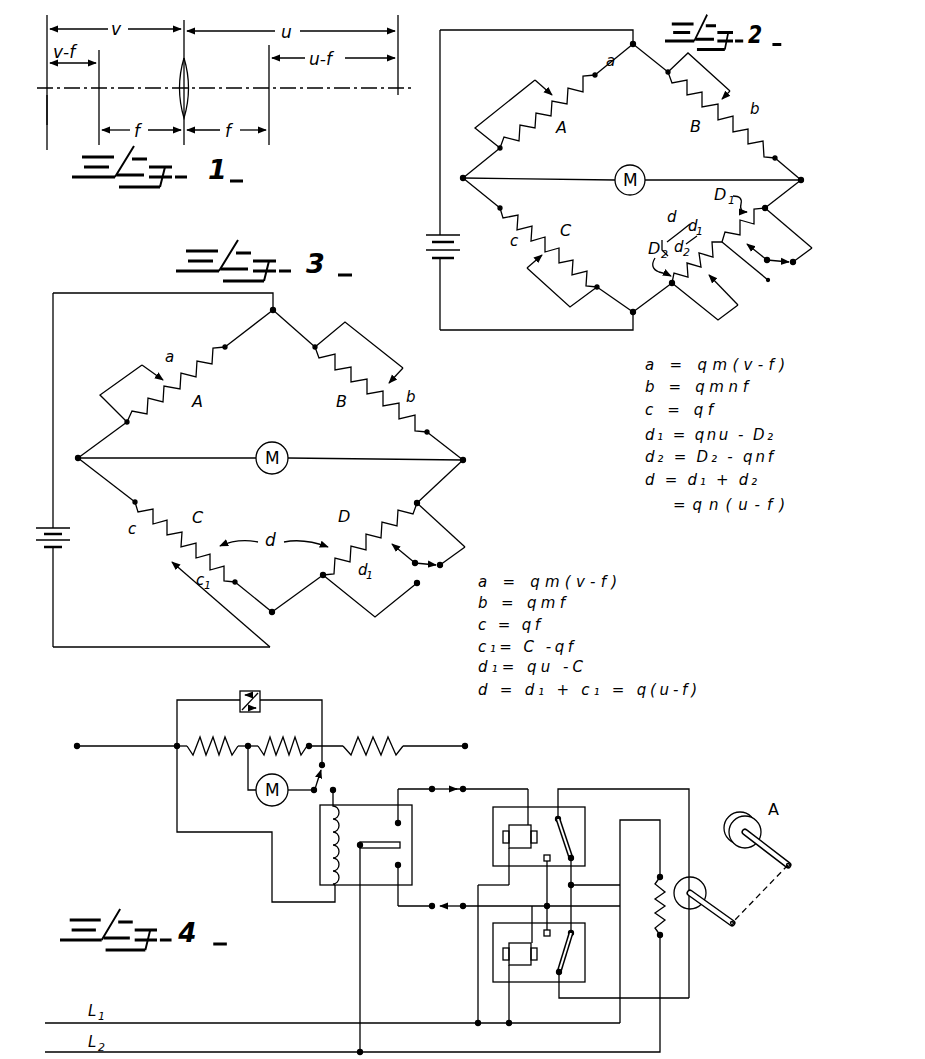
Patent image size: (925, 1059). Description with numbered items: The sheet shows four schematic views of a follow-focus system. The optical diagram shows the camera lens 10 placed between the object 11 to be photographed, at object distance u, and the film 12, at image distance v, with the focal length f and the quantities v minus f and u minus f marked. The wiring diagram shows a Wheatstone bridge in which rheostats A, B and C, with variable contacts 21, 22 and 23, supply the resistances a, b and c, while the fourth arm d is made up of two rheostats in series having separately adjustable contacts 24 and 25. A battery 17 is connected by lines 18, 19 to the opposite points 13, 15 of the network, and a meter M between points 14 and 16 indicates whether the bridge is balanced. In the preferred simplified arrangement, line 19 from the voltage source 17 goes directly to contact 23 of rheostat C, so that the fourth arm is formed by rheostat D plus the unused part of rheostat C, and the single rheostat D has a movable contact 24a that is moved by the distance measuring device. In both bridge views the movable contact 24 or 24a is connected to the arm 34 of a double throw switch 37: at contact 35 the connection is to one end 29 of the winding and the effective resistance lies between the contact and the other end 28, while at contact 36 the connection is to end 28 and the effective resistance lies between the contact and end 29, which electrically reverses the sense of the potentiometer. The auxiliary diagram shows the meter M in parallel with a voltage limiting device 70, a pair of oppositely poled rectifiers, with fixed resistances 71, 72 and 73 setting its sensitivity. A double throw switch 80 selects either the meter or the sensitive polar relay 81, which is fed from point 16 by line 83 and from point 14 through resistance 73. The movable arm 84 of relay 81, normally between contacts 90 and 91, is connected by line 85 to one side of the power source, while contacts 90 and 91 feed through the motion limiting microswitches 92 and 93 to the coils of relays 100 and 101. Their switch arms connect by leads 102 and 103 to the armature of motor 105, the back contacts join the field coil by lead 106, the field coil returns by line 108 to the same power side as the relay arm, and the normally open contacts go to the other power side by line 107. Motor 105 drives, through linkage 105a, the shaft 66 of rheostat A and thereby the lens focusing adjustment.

In FIG. 1, the camera lens 10 is at (188, 70).
In FIG. 1, the object 11 is at (398, 95).
In FIG. 1, the film 12 is at (47, 103).
In FIG. 2, the bridge network point 13 is at (631, 49).
In FIG. 3, the bridge network point 13 is at (270, 318).
In FIG. 2, the bridge network point 14 is at (734, 180).
In FIG. 3, the bridge network point 14 is at (392, 467).
In FIG. 4, the bridge network point 14 is at (446, 736).
In FIG. 2, the bridge network point 15 is at (634, 302).
In FIG. 3, the bridge network point 15 is at (279, 602).
In FIG. 2, the bridge network point 16 is at (531, 178).
In FIG. 3, the bridge network point 16 is at (159, 462).
In FIG. 4, the bridge network point 16 is at (119, 736).
In FIG. 2, the battery 17 is at (448, 180).
In FIG. 3, the battery 17 is at (57, 470).
In FIG. 2, the line 18 is at (536, 27).
In FIG. 3, the line 18 is at (163, 292).
In FIG. 2, the line 19 is at (536, 320).
In FIG. 3, the line 19 is at (161, 636).
In FIG. 2, the variable contact 21 is at (536, 111).
In FIG. 3, the variable contact 21 is at (163, 384).
In FIG. 2, the variable contact 22 is at (721, 106).
In FIG. 3, the variable contact 22 is at (371, 378).
In FIG. 2, the variable contact 23 is at (548, 256).
In FIG. 3, the variable contact 23 is at (201, 573).
In FIG. 2, the variable contact 24 is at (759, 242).
In FIG. 3, the movable contact 24a is at (428, 534).
In FIG. 2, the variable contact 25 is at (705, 297).
In FIG. 2, the winding end 28 is at (725, 252).
In FIG. 3, the winding end 28 is at (323, 575).
In FIG. 2, the winding end 29 is at (788, 225).
In FIG. 3, the winding end 29 is at (419, 503).
In FIG. 2, the switch arm 34 is at (782, 258).
In FIG. 3, the switch arm 34 is at (422, 561).
In FIG. 2, the switch contact 35 is at (807, 260).
In FIG. 3, the switch contact 35 is at (442, 566).
In FIG. 2, the switch contact 36 is at (768, 282).
In FIG. 3, the switch contact 36 is at (416, 581).
In FIG. 2, the double throw switch 37 is at (793, 268).
In FIG. 3, the double throw switch 37 is at (425, 585).
In FIG. 4, the shaft 66 is at (778, 846).
In FIG. 4, the voltage limiting device 70 is at (249, 713).
In FIG. 4, the fixed resistance 71 is at (212, 735).
In FIG. 4, the fixed resistance 72 is at (282, 735).
In FIG. 4, the fixed resistance 73 is at (373, 735).
In FIG. 4, the double throw switch 80 is at (331, 777).
In FIG. 4, the sensitive polar relay 81 is at (387, 807).
In FIG. 4, the line 83 is at (256, 824).
In FIG. 4, the movable arm 84 is at (379, 835).
In FIG. 4, the line 85 is at (349, 951).
In FIG. 4, the relay contact 90 is at (400, 823).
In FIG. 4, the relay contact 91 is at (400, 865).
In FIG. 4, the motion limiting microswitch 92 is at (463, 780).
In FIG. 4, the motion limiting microswitch 93 is at (509, 894).
In FIG. 4, the relay 100 is at (539, 837).
In FIG. 4, the relay 101 is at (539, 964).
In FIG. 4, the lead 102 is at (623, 885).
In FIG. 4, the lead 103 is at (624, 995).
In FIG. 4, the motor 105 is at (704, 897).
In FIG. 4, the linkage 105a is at (756, 892).
In FIG. 4, the lead 106 is at (640, 913).
In FIG. 4, the line 107 is at (644, 926).
In FIG. 4, the line 108 is at (368, 993).